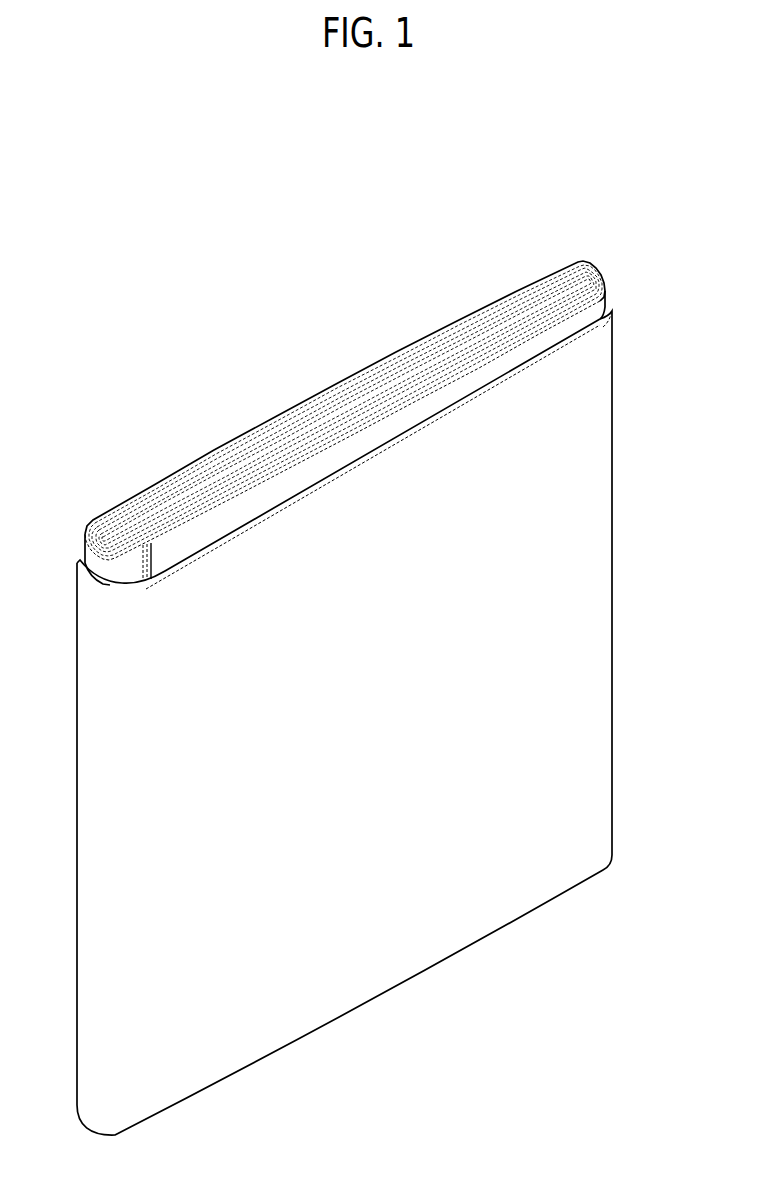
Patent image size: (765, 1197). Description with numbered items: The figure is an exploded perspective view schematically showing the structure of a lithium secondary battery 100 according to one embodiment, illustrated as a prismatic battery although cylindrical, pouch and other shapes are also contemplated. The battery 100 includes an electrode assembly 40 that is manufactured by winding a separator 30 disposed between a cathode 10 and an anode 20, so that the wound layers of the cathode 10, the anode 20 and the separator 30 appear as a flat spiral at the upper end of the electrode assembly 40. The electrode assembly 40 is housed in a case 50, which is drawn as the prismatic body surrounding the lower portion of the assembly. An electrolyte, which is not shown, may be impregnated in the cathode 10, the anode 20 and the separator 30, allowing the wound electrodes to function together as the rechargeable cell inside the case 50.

The lithium secondary battery 100 is at (326, 133).
The cathode 10 is at (604, 272).
The anode 20 is at (561, 262).
The separator 30 is at (587, 262).
The electrode assembly 40 is at (318, 357).
The case 50 is at (594, 566).